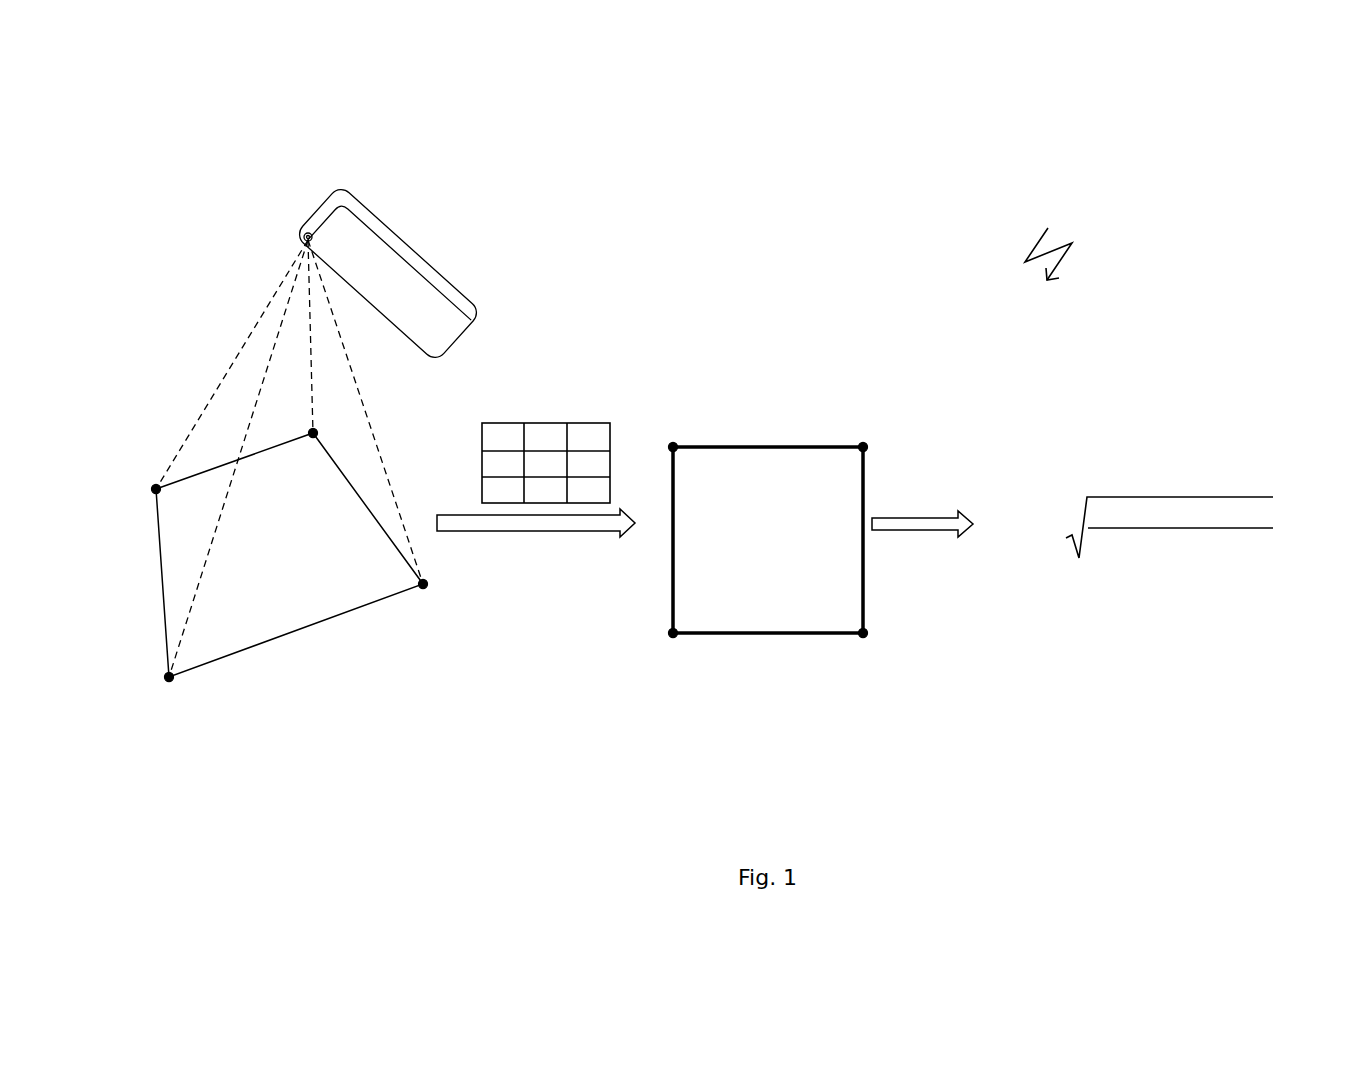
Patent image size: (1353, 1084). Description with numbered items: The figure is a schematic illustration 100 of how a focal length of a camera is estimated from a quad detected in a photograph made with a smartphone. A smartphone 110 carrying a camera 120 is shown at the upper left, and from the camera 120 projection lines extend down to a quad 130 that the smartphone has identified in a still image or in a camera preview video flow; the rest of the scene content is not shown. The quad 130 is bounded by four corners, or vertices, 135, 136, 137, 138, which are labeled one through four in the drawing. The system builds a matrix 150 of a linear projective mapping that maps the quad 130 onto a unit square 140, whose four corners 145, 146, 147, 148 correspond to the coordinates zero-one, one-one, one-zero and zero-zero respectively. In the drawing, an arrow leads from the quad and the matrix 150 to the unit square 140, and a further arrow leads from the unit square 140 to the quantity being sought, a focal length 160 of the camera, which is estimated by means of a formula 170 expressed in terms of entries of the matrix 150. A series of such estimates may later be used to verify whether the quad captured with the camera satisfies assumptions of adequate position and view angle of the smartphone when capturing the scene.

The schematic illustration 100 is at (1048, 242).
The smartphone 110 is at (327, 195).
The camera 120 is at (303, 237).
The quad 130 is at (255, 655).
The corner 135 is at (148, 480).
The corner 136 is at (316, 430).
The corner 137 is at (423, 594).
The corner 138 is at (170, 692).
The unit square 140 is at (815, 443).
The corner 145 is at (672, 447).
The corner 146 is at (873, 448).
The corner 147 is at (862, 637).
The corner 148 is at (677, 637).
The matrix 150 is at (522, 418).
The focal length 160 is at (1008, 497).
The formula 170 is at (1127, 482).